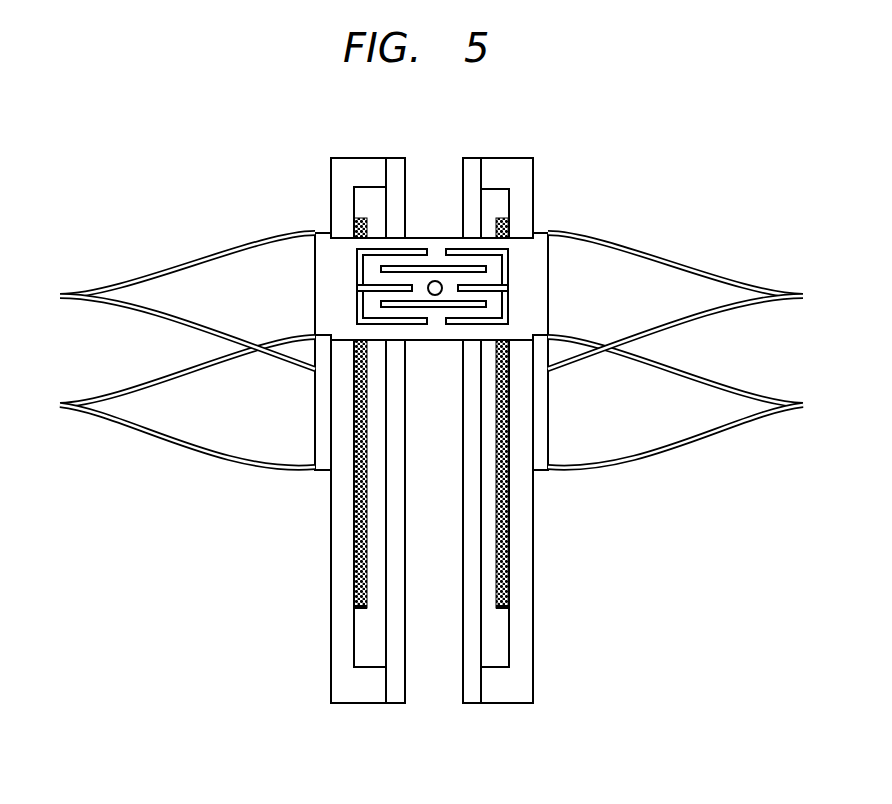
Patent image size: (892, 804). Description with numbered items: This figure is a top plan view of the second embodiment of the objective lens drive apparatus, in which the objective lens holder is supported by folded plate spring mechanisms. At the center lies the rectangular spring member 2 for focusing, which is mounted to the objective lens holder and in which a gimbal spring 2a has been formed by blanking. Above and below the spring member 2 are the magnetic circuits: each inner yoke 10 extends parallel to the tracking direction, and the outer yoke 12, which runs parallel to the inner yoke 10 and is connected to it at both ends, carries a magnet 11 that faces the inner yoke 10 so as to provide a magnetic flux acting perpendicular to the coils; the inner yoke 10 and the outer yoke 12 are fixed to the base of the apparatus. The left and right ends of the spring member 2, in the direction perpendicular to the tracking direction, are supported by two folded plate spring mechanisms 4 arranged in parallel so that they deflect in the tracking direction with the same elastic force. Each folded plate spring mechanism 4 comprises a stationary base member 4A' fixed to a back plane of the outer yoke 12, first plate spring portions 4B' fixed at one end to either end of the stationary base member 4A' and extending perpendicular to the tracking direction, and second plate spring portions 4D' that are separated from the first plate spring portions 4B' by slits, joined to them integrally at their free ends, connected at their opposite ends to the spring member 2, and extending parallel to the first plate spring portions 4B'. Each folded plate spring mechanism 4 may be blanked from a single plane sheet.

The spring member 2 is at (538, 299).
The gimbal spring 2a is at (433, 326).
The folded plate spring mechanism 4 is at (82, 361).
The stationary base member 4A' is at (436, 402).
The first plate spring portion 4B' is at (431, 389).
The second plate spring portion 4D' is at (431, 292).
The inner yoke 10 is at (470, 168).
The magnet 11 is at (358, 581).
The outer yoke 12 is at (518, 173).